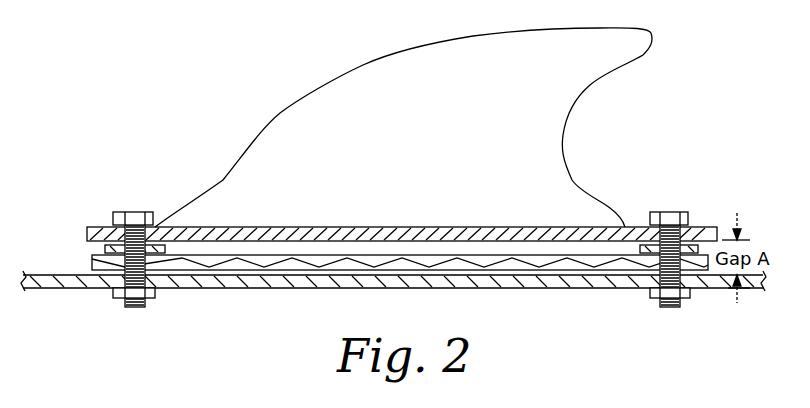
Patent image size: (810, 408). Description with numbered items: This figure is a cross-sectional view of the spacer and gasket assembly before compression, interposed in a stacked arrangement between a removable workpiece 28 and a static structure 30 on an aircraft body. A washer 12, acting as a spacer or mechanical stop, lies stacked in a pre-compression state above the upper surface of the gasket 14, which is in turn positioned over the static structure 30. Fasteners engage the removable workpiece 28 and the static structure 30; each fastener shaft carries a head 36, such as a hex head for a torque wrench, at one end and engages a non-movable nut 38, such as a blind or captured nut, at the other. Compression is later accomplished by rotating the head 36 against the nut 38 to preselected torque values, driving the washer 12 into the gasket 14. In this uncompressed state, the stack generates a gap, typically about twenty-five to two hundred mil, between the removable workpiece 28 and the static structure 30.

The removable workpiece 28 is at (237, 127).
The washer 12 is at (103, 249).
The gasket 14 is at (92, 259).
The static structure 30 is at (536, 289).
The head 36 is at (674, 211).
The nut 38 is at (659, 297).